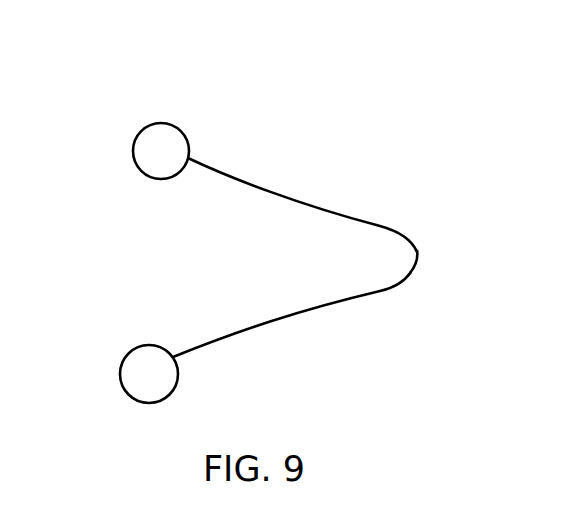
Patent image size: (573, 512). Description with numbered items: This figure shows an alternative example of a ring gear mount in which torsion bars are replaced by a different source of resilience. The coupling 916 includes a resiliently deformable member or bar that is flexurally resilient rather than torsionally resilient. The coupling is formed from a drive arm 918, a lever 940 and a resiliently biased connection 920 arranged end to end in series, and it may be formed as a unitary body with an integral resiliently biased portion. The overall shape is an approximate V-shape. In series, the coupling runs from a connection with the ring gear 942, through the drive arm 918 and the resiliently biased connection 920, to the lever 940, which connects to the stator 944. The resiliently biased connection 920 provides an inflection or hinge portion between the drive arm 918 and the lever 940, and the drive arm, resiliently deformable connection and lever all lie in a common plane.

The coupling 916 is at (390, 111).
The drive arm 918 is at (323, 307).
The resiliently biased connection 920 is at (418, 247).
The lever 940 is at (240, 180).
The connection with the ring gear 942 is at (125, 352).
The stator 944 is at (142, 130).